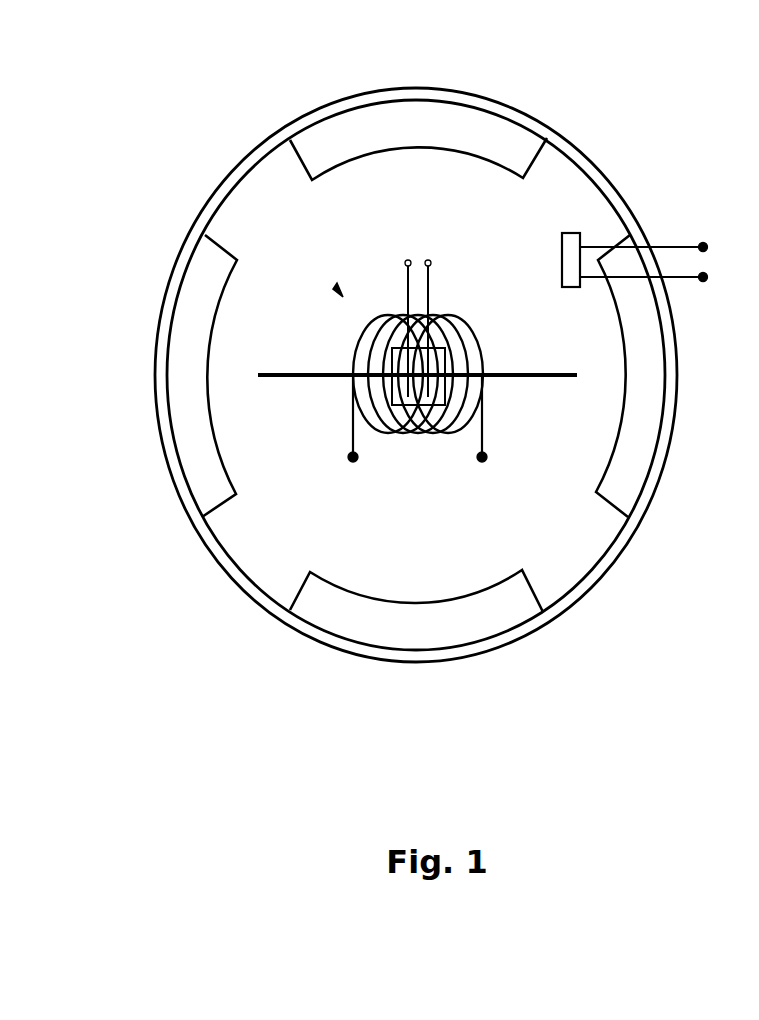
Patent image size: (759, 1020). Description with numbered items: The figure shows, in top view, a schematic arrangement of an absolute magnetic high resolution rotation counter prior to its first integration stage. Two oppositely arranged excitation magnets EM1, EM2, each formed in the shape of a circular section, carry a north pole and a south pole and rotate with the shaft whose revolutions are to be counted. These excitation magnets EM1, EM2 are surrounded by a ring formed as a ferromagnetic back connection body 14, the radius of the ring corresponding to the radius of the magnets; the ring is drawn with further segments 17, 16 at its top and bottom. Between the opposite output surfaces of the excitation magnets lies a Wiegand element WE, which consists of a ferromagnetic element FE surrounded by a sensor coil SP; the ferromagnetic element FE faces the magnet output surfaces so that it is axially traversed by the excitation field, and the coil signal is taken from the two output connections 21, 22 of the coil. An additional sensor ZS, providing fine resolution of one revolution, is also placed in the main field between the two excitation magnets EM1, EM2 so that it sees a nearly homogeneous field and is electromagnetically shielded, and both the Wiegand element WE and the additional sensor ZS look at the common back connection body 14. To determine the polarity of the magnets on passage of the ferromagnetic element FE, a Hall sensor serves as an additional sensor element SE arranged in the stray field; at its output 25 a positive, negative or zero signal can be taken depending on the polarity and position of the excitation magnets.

The back connection body 14 is at (267, 150).
The upper permanent magnet segment 17 is at (427, 123).
The lower permanent magnet segment 16 is at (432, 628).
The excitation magnet EM1 is at (187, 337).
The excitation magnet EM2 is at (642, 445).
The additional sensor element SE is at (572, 248).
The output-connection of Hall sensor 25 is at (662, 263).
The ferromagnetic element FE is at (505, 377).
The sensor coil SP is at (457, 348).
The additional sensor ZS is at (443, 350).
The output-connection of coil 21 is at (356, 437).
The output-connection of coil 22 is at (486, 437).
The Wiegand element WE is at (338, 290).